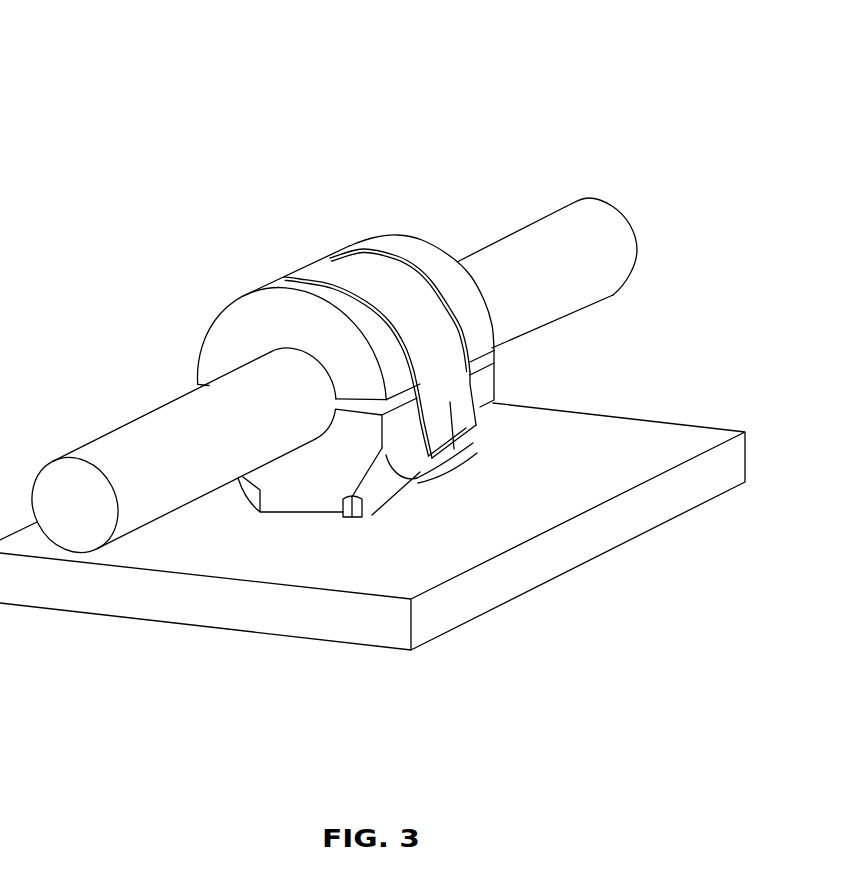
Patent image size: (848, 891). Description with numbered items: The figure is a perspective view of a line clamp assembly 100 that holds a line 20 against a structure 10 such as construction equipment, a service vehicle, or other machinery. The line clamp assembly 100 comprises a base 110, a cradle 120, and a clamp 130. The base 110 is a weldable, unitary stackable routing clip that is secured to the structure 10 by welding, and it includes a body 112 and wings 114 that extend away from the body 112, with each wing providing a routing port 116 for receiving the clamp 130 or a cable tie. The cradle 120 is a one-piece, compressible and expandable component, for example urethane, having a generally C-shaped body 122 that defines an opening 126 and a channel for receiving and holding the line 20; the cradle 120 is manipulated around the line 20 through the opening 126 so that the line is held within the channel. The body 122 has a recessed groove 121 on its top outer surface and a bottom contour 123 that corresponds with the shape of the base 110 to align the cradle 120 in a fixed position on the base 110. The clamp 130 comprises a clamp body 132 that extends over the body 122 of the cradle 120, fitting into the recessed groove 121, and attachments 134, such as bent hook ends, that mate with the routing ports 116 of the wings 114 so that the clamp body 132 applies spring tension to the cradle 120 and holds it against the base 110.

The structure 10 is at (682, 424).
The line 20 is at (628, 257).
The line clamp assembly 100 is at (113, 58).
The base 110 is at (489, 500).
The body 112 is at (350, 517).
The wings 114 is at (383, 487).
The routing ports 116 is at (408, 482).
The cradle 120 is at (228, 296).
The recessed groove 121 is at (410, 275).
The body 122 is at (393, 242).
The bottom contour 123 is at (293, 508).
The opening 126 is at (352, 401).
The clamp 130 is at (294, 253).
The clamp body 132 is at (362, 267).
The attachments 134 is at (448, 462).